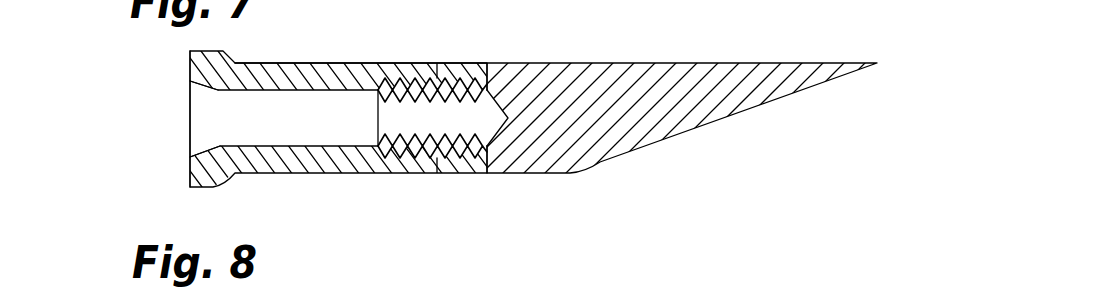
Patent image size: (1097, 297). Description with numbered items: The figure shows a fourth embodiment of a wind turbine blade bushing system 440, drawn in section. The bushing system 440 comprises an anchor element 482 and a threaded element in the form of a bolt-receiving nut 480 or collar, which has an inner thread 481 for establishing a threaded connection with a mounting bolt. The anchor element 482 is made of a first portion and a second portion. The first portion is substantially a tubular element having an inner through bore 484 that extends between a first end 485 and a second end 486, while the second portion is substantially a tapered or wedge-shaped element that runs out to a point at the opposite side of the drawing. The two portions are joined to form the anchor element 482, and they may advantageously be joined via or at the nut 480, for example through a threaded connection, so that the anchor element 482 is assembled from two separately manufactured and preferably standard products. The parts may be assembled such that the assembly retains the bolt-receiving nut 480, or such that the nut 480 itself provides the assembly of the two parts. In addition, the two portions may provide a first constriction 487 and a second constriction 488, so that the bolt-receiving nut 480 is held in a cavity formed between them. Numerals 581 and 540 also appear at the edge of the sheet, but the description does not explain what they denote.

In FIG. 7, the wind turbine blade bushing system 440 is at (715, 43).
In FIG. 7, the bolt-receiving nut 480 is at (453, 68).
In FIG. 7, the inner thread 481 is at (470, 101).
In FIG. 7, the anchor element 482 is at (385, 52).
In FIG. 7, the inner through bore 484 is at (233, 115).
In FIG. 7, the first end 485 is at (190, 138).
In FIG. 7, the second end 486 is at (490, 137).
In FIG. 7, the first constriction 487 is at (385, 158).
In FIG. 7, the second constriction 488 is at (468, 158).
In FIG. 8, the pin thread 581 is at (543, 286).
In FIG. 8, the blade 540 is at (743, 285).